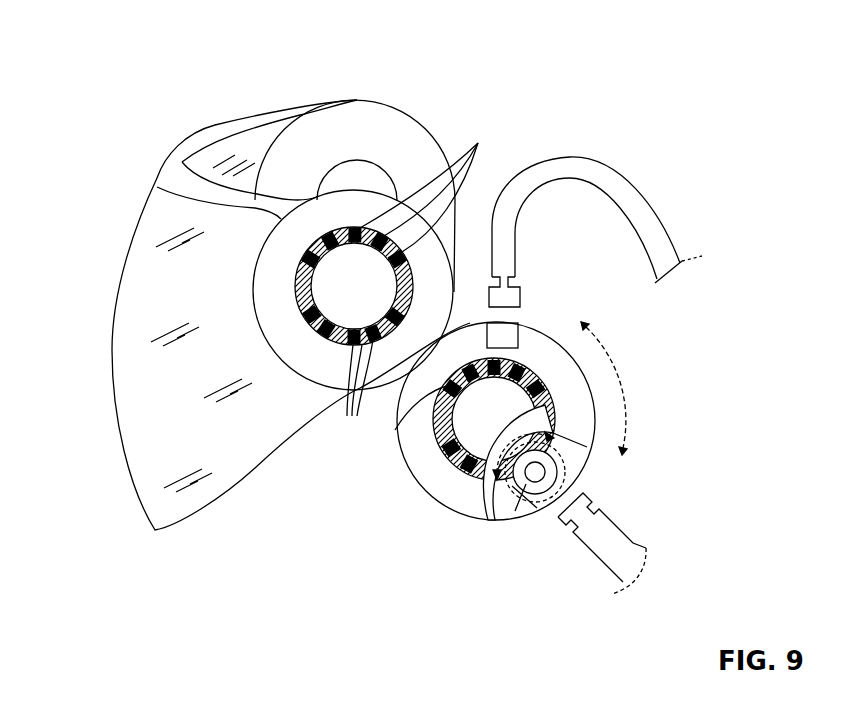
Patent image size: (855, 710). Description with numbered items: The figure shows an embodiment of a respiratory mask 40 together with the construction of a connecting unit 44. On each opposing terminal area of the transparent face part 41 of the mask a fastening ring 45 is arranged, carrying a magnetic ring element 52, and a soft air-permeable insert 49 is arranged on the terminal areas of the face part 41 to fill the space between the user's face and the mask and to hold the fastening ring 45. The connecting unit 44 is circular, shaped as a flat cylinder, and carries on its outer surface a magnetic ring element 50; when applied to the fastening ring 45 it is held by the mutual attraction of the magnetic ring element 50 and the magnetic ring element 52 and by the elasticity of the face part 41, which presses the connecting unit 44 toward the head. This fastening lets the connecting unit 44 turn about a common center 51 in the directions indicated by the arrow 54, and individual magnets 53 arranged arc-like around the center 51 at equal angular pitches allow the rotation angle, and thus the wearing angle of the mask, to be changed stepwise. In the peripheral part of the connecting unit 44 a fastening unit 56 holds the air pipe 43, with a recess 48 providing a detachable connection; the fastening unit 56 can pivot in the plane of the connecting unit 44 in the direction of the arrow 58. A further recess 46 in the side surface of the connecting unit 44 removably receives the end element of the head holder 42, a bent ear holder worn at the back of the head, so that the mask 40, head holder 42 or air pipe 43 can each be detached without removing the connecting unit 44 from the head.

The respiratory mask 40 is at (136, 159).
The face part 41 is at (133, 364).
The head holder 42 is at (598, 171).
The air pipe 43 is at (643, 536).
The connecting unit 44 is at (380, 477).
The fastening ring 45 is at (357, 122).
The recess 46 is at (522, 323).
The recess 48 is at (558, 456).
The insert 49 is at (211, 141).
The magnetic ring element 50 is at (455, 466).
The common center 51 is at (342, 303).
The magnetic ring element 52 is at (281, 376).
The magnets 53 is at (370, 427).
The arrow 54 is at (627, 385).
The fastening unit 56 is at (513, 489).
The arrow 58 is at (486, 486).